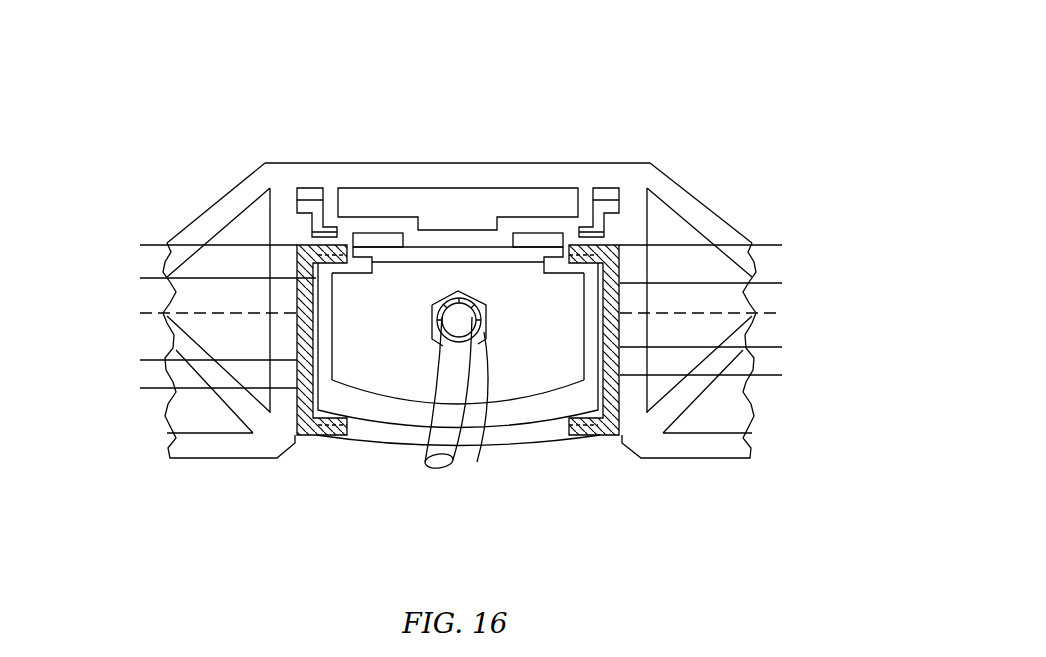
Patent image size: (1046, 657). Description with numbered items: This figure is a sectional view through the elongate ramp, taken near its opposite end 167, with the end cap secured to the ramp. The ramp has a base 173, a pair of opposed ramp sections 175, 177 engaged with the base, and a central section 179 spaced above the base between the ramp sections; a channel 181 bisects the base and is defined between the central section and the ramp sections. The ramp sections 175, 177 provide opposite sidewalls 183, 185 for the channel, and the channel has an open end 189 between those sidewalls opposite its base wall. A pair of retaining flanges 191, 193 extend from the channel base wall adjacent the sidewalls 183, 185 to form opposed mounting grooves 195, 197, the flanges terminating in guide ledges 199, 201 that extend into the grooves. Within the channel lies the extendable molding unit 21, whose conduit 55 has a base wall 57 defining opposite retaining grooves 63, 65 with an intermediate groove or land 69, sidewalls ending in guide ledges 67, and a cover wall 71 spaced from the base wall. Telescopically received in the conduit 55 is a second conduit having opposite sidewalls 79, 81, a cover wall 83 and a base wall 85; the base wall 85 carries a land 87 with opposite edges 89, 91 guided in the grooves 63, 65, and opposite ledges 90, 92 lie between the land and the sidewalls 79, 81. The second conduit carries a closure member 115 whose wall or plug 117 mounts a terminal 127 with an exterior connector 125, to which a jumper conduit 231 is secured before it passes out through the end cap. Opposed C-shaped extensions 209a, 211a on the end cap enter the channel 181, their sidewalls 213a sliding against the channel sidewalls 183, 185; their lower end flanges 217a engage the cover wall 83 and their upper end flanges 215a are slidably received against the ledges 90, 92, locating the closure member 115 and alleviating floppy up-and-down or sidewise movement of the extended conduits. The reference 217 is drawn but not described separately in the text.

The opposite end of elongate ramp 167 is at (735, 110).
The extendable molding unit 21 is at (405, 452).
The conduit 55 is at (310, 196).
The base wall 57 is at (491, 228).
The retaining groove 63 is at (380, 232).
The retaining groove 65 is at (547, 232).
The guide ledge 67 is at (296, 238).
The intermediate groove or land 69 is at (433, 232).
The cover wall 71 is at (362, 438).
The sidewall 79 is at (334, 341).
The sidewall 81 is at (583, 347).
The cover wall 83 is at (500, 443).
The base wall 85 is at (472, 264).
The land 87 is at (463, 264).
The edge of land 89 is at (368, 273).
The ledge 90 is at (203, 313).
The edge of land 91 is at (535, 273).
The ledge 92 is at (717, 313).
The closure member 115 is at (390, 406).
The wall or plug 117 is at (423, 382).
The exterior connector 125 is at (488, 334).
The terminal 127 is at (477, 462).
The base 173 is at (223, 462).
The ramp section 175 is at (237, 190).
The ramp section 177 is at (707, 204).
The central section 179 is at (450, 190).
The channel 181 is at (464, 225).
The sidewall of channel 183 is at (203, 278).
The sidewall of channel 185 is at (724, 283).
The open end of channel 189 is at (626, 447).
The retaining flange 191 is at (332, 196).
The retaining flange 193 is at (586, 196).
The mounting groove 195 is at (345, 222).
The mounting groove 197 is at (606, 196).
The guide ledge 199 is at (266, 163).
The guide ledge 201 is at (607, 215).
The C-shaped extension 209a is at (186, 388).
The C-shaped extension 211a is at (732, 375).
The sidewall of C-shaped extension 213a is at (459, 354).
The upper end flange 215a is at (459, 245).
The bracket 217 is at (577, 440).
The lower end flange 217a is at (323, 440).
The jumper conduit 231 is at (430, 466).